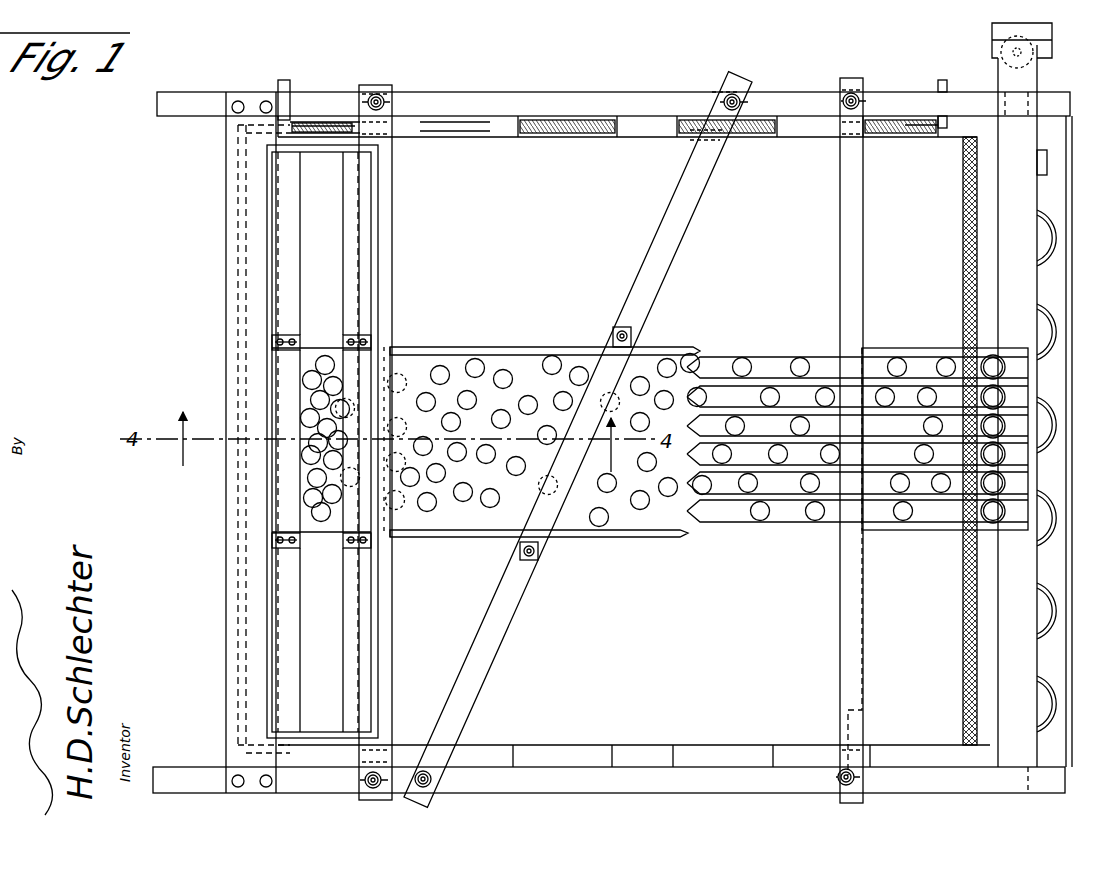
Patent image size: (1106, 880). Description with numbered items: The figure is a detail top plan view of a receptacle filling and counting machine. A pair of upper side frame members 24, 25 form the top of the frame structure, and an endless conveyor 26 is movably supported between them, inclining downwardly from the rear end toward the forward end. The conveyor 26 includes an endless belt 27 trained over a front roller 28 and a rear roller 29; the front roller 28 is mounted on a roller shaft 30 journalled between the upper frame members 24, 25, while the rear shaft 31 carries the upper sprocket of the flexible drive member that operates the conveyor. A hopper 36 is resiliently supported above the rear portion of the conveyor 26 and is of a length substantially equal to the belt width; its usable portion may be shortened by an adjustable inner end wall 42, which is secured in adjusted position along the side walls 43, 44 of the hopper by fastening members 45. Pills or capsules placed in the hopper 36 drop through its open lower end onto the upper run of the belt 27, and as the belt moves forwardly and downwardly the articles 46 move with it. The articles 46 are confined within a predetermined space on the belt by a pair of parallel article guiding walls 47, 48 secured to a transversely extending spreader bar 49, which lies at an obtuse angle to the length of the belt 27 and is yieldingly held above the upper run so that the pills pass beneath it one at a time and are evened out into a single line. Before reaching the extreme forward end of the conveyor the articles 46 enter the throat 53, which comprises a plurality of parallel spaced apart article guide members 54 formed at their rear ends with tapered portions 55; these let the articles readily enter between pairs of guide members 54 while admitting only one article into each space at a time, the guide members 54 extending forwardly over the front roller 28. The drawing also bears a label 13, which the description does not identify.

The frame 13 is at (850, 455).
The upper side frame member 24 is at (655, 98).
The upper side frame member 25 is at (640, 773).
The endless conveyor 26 is at (497, 242).
The endless belt 27 is at (493, 148).
The front roller 28 is at (913, 130).
The rear roller 29 is at (332, 128).
The roller shaft 30 is at (946, 79).
The rear shaft 31 is at (292, 86).
The hopper 36 is at (305, 441).
The adjustable inner end wall 42 is at (324, 536).
The side wall 43 is at (283, 600).
The side wall 44 is at (365, 612).
The fastening member 45 is at (275, 545).
The articles 46 is at (506, 374).
The article guiding wall 47 is at (566, 346).
The article guiding wall 48 is at (604, 538).
The spreader bar 49 is at (680, 233).
The throat 53 is at (886, 348).
The article guide member 54 is at (857, 435).
The tapered portion 55 is at (708, 356).